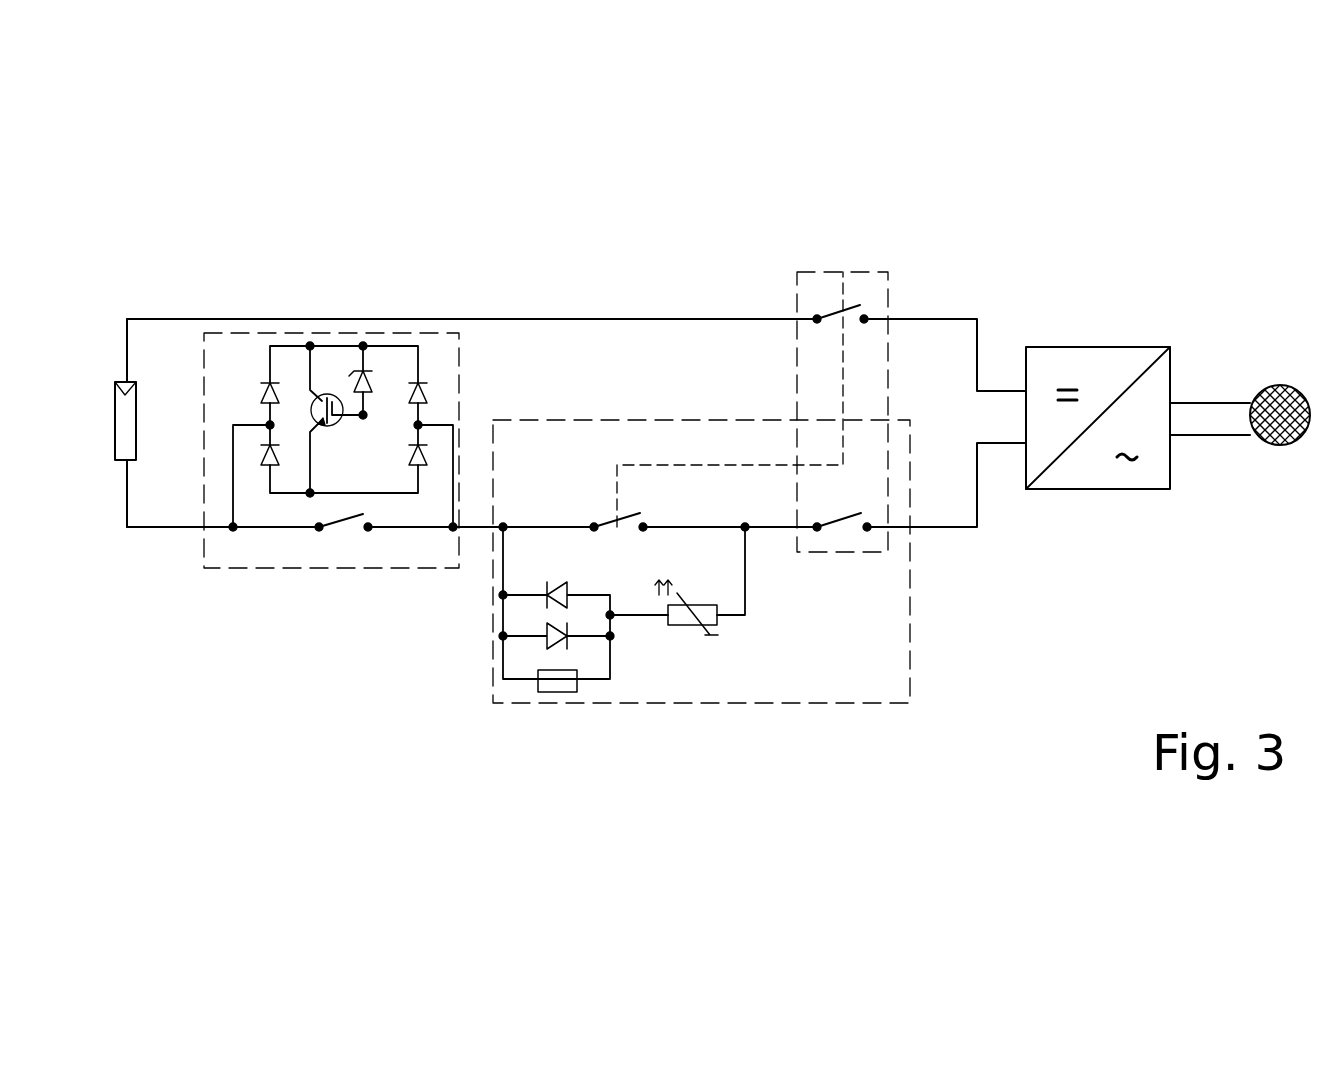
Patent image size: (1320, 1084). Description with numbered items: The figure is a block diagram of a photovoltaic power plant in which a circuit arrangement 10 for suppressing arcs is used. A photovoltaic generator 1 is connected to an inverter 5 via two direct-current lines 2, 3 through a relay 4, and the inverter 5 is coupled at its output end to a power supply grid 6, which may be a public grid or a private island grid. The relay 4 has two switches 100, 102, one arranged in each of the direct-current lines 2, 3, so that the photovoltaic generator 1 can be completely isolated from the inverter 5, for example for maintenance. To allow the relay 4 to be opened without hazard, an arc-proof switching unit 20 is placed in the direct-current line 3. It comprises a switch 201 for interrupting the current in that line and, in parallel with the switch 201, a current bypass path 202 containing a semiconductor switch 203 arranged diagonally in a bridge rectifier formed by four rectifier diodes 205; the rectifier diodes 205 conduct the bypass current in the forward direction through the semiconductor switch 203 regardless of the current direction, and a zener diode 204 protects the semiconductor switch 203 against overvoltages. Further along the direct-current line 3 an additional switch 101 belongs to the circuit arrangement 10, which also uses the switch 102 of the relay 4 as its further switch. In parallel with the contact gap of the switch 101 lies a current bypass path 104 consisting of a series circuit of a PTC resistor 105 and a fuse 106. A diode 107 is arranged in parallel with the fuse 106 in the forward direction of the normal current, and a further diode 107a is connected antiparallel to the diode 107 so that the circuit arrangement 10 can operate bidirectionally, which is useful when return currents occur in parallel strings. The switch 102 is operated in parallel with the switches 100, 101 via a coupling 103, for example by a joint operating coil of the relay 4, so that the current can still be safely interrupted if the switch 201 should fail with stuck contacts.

The photovoltaic generator 1 is at (138, 415).
The direct-current line 2 is at (168, 318).
The direct-current line 3 is at (166, 529).
The relay 4 is at (857, 272).
The inverter 5 is at (1120, 347).
The power supply grid 6 is at (1270, 384).
The circuit arrangement 10 is at (773, 703).
The arc-proof switching unit 20 is at (307, 568).
The switch 100 is at (828, 310).
The switch 101 is at (600, 521).
The further switch 102 is at (838, 530).
The coupling 103 is at (733, 465).
The current bypass path 104 is at (671, 668).
The PTC resistor 105 is at (693, 627).
The fuse 106 is at (553, 690).
The diode 107 is at (567, 590).
The further diode 107a is at (568, 640).
The switch 201 is at (343, 523).
The current bypass path 202 is at (395, 389).
The semiconductor switch 203 is at (330, 395).
The zener diode 204 is at (372, 383).
The rectifier diodes 205 is at (262, 460).